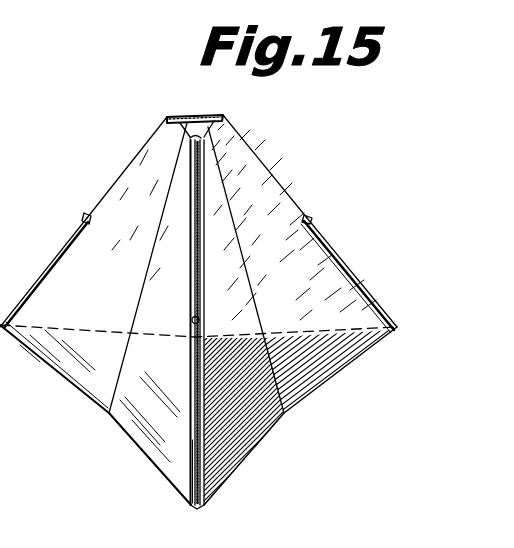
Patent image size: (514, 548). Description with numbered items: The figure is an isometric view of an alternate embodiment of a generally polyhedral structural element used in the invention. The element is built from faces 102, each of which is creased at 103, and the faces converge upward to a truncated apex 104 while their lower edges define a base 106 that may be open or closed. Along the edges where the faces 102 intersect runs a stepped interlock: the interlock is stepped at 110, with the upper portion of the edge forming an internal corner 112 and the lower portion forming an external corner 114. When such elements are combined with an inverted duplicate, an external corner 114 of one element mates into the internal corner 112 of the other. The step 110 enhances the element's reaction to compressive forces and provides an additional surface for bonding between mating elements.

The faces 102 is at (270, 283).
The crease 103 is at (140, 299).
The truncated apex 104 is at (187, 116).
The base 106 is at (147, 466).
The step 110 is at (70, 228).
The internal corner 112 is at (200, 188).
The external corner 114 is at (352, 260).